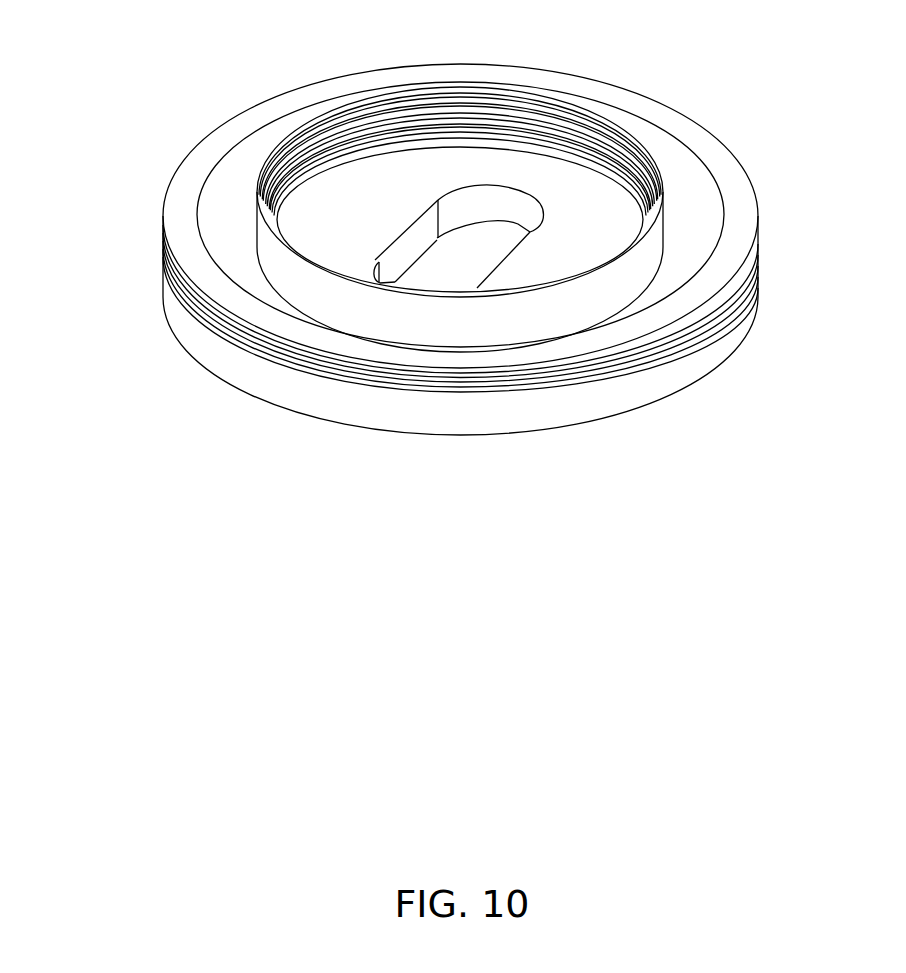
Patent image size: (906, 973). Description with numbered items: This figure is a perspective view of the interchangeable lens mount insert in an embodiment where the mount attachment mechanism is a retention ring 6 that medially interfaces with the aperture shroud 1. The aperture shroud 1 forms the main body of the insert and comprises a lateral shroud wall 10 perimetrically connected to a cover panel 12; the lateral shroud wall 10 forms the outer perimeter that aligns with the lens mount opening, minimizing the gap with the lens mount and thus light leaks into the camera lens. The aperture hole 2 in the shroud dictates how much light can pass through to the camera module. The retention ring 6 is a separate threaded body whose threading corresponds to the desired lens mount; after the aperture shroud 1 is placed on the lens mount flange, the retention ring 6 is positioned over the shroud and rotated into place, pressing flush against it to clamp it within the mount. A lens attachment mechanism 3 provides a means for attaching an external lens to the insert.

The aperture shroud 1 is at (459, 269).
The aperture hole 2 is at (459, 230).
The lens attachment mechanism 3 is at (523, 105).
The retention ring 6 is at (748, 198).
The lateral shroud wall 10 is at (200, 353).
The cover panel 12 is at (515, 219).